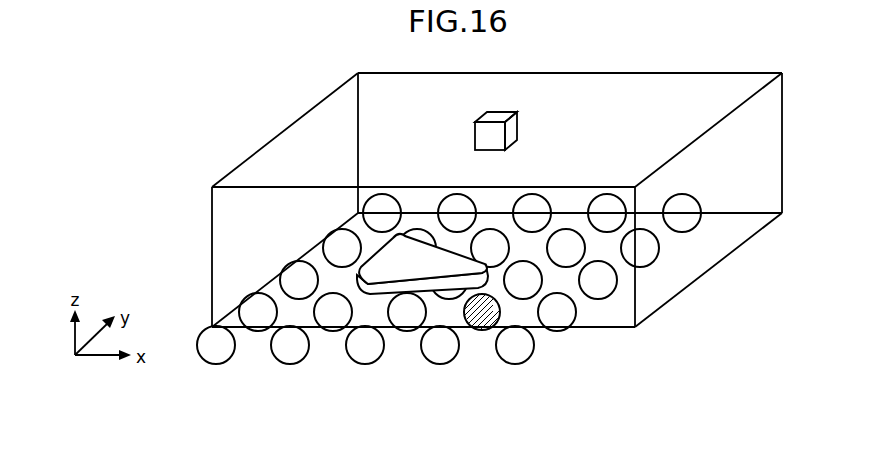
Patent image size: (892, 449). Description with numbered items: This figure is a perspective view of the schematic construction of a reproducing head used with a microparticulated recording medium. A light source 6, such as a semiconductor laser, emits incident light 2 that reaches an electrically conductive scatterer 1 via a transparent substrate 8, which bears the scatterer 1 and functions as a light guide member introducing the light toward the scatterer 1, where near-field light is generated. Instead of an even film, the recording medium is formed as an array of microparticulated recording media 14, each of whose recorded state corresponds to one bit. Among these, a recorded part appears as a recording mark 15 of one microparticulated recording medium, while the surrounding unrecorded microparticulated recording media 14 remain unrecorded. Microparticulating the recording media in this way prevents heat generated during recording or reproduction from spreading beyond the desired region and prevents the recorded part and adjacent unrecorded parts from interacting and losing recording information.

The scatterer 1 is at (358, 276).
The incident light 2 is at (492, 220).
The light source 6 is at (475, 130).
The transparent substrate 8 is at (212, 250).
The microparticulated recording media 14 is at (278, 364).
The recording mark 15 is at (476, 322).